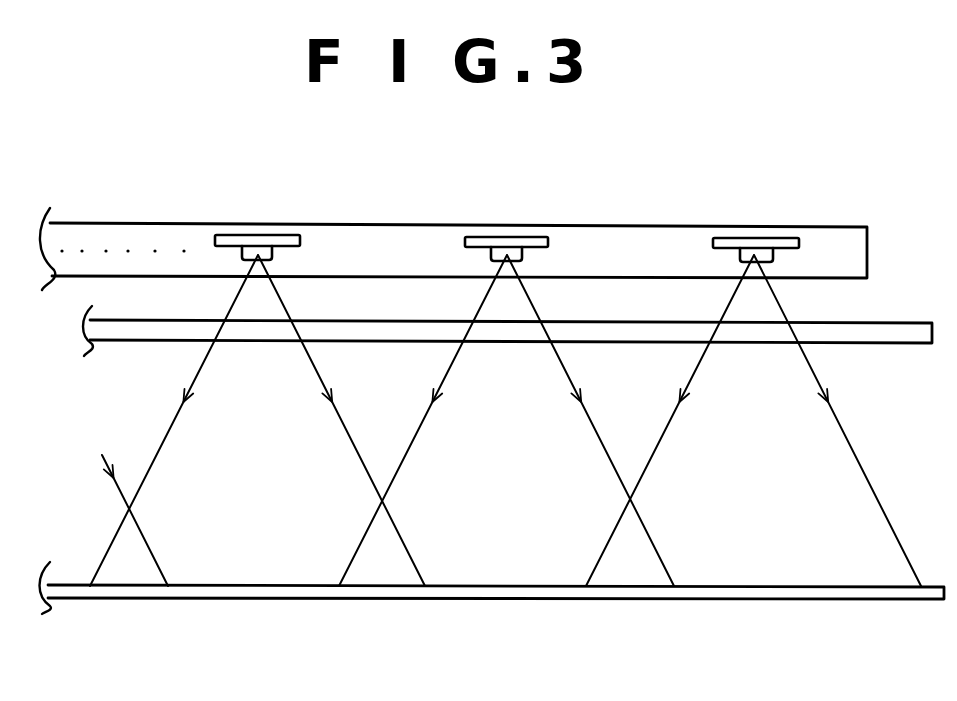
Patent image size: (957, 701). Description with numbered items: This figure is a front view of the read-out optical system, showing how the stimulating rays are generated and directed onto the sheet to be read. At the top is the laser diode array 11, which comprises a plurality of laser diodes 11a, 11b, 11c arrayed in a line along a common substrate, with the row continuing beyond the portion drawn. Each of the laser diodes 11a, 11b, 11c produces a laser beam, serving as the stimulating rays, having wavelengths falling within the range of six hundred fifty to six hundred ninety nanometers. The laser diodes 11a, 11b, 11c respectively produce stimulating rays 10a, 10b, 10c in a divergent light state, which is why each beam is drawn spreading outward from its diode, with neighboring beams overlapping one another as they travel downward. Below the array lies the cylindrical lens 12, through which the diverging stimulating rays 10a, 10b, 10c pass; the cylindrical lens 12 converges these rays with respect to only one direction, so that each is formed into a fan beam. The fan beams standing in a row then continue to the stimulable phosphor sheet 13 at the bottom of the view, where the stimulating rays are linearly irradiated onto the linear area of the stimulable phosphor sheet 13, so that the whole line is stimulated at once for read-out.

The laser diode array 11 is at (612, 226).
The laser diode 11a is at (760, 238).
The laser diode 11b is at (499, 237).
The laser diode 11c is at (252, 235).
The stimulating rays 10a is at (647, 472).
The stimulating rays 10b is at (395, 478).
The stimulating rays 10c is at (145, 468).
The cylindrical lens 12 is at (890, 323).
The stimulable phosphor sheet 13 is at (786, 587).